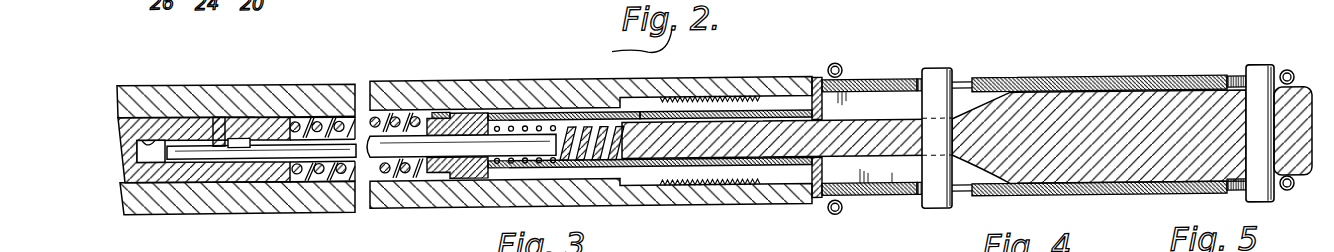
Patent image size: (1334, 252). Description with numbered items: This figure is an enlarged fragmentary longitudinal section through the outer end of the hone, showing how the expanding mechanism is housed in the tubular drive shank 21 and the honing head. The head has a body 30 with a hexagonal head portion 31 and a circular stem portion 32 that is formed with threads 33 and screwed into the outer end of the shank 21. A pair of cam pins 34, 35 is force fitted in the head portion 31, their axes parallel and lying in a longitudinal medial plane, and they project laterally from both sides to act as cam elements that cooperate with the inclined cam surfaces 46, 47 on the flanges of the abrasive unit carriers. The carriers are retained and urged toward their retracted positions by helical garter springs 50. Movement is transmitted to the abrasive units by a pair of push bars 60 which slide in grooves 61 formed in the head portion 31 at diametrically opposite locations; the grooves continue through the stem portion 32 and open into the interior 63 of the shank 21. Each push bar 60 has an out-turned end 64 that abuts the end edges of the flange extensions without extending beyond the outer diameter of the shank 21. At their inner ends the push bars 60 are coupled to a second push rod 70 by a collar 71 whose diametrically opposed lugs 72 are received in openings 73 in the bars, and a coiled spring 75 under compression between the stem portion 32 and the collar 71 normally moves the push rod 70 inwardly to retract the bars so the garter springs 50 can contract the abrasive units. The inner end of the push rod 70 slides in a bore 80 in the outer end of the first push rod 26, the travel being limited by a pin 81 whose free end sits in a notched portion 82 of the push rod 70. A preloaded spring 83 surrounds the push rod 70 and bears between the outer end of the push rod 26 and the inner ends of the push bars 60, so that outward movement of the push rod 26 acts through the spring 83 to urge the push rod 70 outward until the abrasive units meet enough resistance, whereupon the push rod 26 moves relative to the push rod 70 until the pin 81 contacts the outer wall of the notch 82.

The tubular drive shank 21 is at (660, 213).
The push rod 26 is at (180, 142).
The body 30 is at (1133, 180).
The head portion 31 is at (1160, 93).
The stem portion 32 is at (797, 156).
The threads 33 is at (720, 194).
The cam pin 34 is at (1262, 215).
The cam pin 35 is at (940, 214).
The outer cam surface 46 is at (1237, 94).
The rear cam surface 47 is at (913, 90).
The helical garter spring 50 is at (835, 222).
The push bar 60 is at (602, 174).
The groove 61 is at (860, 106).
The interior of the shank 63 is at (536, 118).
The out-turned end 64 is at (818, 88).
The push rod 70 is at (405, 142).
The collar 71 is at (447, 178).
The upper hub 72 is at (462, 120).
The opening 73 is at (484, 121).
The coiled spring 75 is at (592, 133).
The bore 80 is at (147, 141).
The pin 81 is at (219, 122).
The notched portion 82 is at (242, 143).
The preloaded spring 83 is at (313, 176).